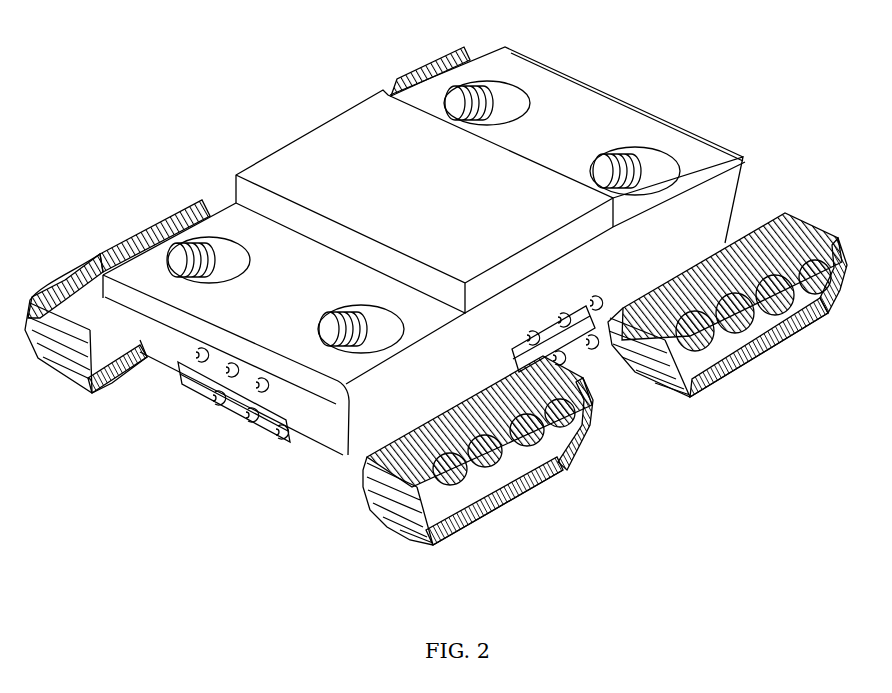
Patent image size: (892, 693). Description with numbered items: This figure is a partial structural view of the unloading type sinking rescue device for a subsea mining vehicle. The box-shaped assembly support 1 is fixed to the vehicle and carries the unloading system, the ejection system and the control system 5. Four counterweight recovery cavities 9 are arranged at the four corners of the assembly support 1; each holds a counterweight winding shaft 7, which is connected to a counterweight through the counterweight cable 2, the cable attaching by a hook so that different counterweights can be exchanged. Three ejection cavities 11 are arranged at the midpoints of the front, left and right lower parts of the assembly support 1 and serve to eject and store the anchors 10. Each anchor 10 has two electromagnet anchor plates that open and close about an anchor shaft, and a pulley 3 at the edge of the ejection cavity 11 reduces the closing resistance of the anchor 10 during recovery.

The assembly support 1 is at (613, 140).
The counterweight cable 2 is at (182, 240).
The pulley 3 is at (203, 390).
The control system 5 is at (427, 185).
The counterweight winding shaft 7 is at (630, 177).
The counterweight recovery cavity 9 is at (353, 358).
The anchor 10 is at (260, 417).
The ejection cavity 11 is at (598, 332).